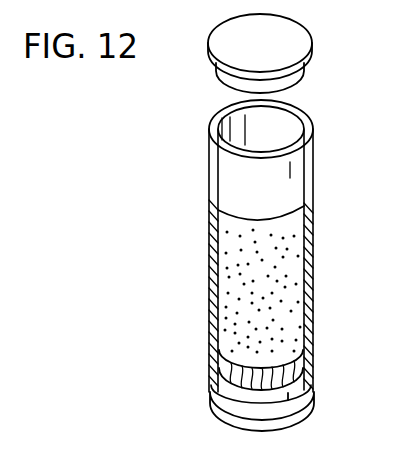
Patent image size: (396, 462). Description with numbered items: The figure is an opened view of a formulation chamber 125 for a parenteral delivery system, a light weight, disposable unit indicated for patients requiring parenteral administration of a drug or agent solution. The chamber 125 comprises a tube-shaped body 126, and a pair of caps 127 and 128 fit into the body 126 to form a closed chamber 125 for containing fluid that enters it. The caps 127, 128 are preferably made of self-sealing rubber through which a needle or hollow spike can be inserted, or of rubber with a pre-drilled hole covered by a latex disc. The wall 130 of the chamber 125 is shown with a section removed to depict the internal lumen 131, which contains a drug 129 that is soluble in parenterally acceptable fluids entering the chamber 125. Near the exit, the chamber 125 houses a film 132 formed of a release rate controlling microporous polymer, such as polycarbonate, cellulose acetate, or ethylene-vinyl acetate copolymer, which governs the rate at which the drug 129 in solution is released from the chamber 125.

The formulation chamber 125 is at (327, 137).
The body 126 is at (313, 210).
The cap 127 is at (314, 41).
The cap 128 is at (312, 413).
The drug 129 is at (294, 289).
The wall 130 is at (306, 239).
The internal lumen 131 is at (298, 256).
The film 132 is at (297, 372).